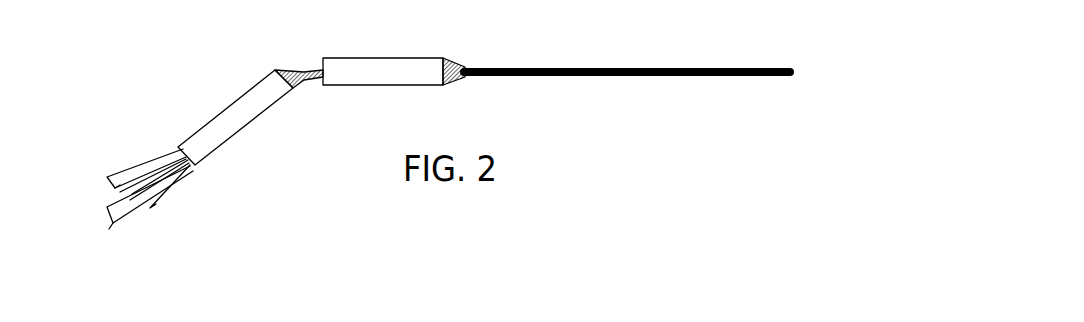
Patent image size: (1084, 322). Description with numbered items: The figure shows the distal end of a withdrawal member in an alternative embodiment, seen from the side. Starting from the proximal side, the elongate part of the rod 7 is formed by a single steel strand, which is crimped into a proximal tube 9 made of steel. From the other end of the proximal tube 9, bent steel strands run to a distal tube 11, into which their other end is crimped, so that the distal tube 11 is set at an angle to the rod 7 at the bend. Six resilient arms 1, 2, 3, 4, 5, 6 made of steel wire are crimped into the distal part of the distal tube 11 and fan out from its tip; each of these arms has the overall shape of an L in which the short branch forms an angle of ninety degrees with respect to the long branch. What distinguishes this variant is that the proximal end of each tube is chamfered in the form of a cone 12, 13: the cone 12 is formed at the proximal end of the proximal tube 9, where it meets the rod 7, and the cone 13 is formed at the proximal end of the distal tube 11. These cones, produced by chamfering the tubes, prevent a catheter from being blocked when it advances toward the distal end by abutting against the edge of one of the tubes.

The resilient arm 1 is at (106, 178).
The resilient arm 2 is at (141, 186).
The resilient arm 3 is at (169, 164).
The resilient arm 4 is at (157, 193).
The resilient arm 5 is at (172, 190).
The resilient arm 6 is at (183, 176).
The rod 7 is at (628, 77).
The proximal tube 9 is at (385, 70).
The distal tube 11 is at (238, 121).
The cone 12 is at (452, 87).
The cone 13 is at (283, 73).